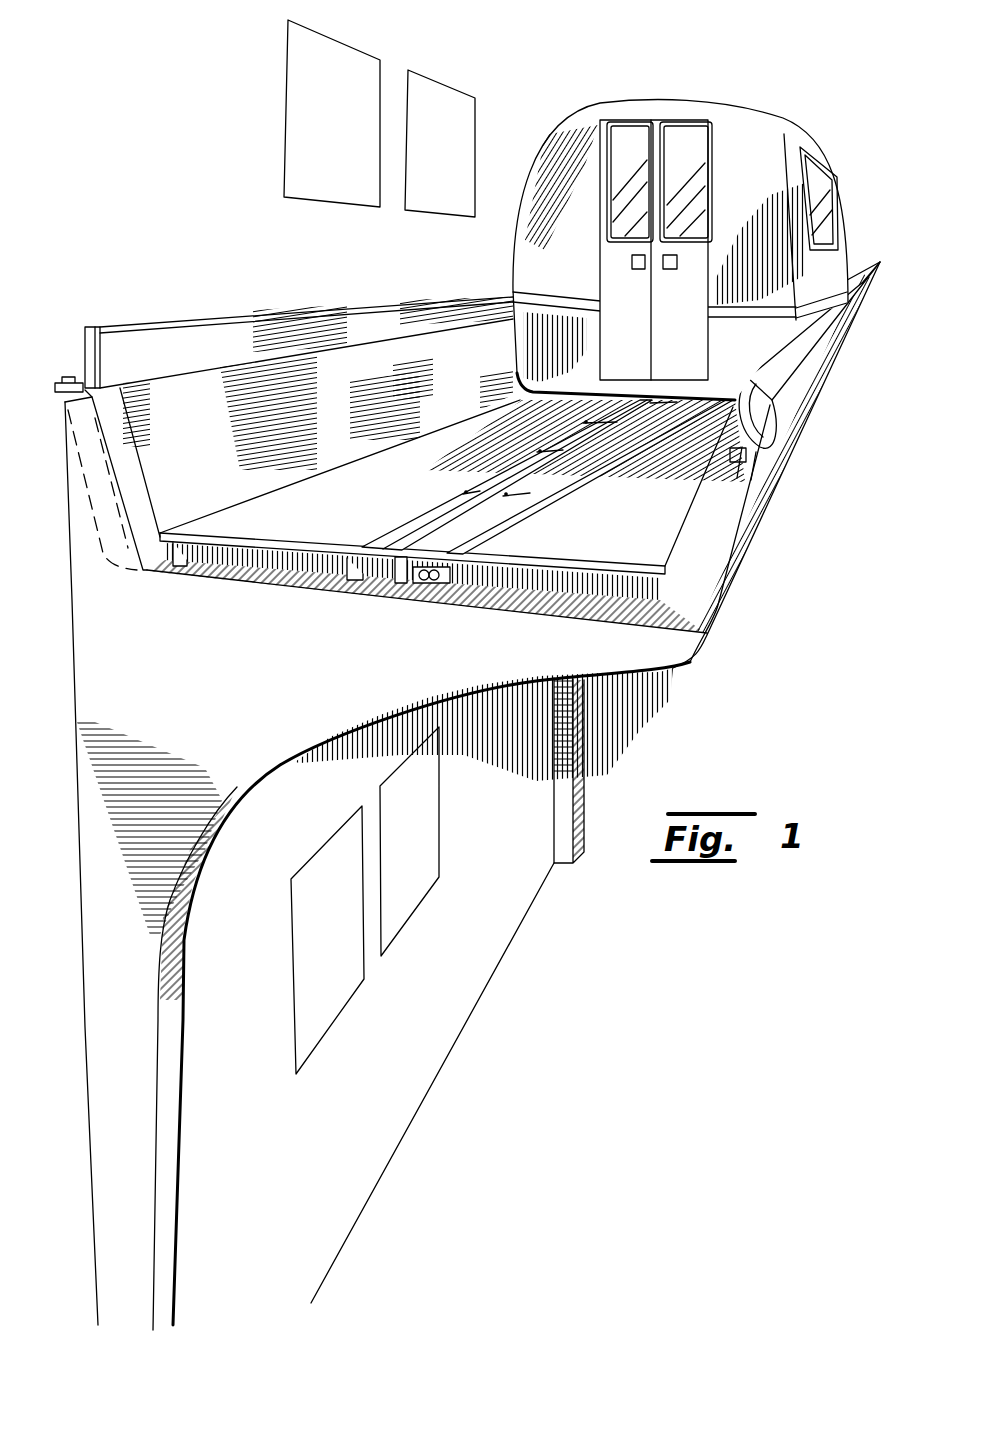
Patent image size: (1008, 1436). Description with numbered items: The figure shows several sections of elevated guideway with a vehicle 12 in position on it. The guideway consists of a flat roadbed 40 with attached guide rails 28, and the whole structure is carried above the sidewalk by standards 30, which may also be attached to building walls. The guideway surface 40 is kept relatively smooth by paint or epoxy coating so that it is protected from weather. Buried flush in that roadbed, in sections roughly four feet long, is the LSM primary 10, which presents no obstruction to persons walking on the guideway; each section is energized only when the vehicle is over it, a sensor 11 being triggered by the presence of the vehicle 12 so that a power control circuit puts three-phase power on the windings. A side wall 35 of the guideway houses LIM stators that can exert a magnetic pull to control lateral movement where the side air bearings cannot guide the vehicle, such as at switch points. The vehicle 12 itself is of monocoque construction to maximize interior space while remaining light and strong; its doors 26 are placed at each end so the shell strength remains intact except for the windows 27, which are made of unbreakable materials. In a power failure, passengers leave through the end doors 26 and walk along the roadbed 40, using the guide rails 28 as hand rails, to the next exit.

The LSM primary 10 is at (407, 597).
The sensor 11 is at (512, 510).
The vehicle 12 is at (680, 232).
The doors 26 is at (686, 241).
The windows 27 is at (708, 150).
The guide rails 28 is at (180, 335).
The standards 30 is at (167, 668).
The side wall 35 is at (200, 460).
The roadbed 40 is at (600, 543).